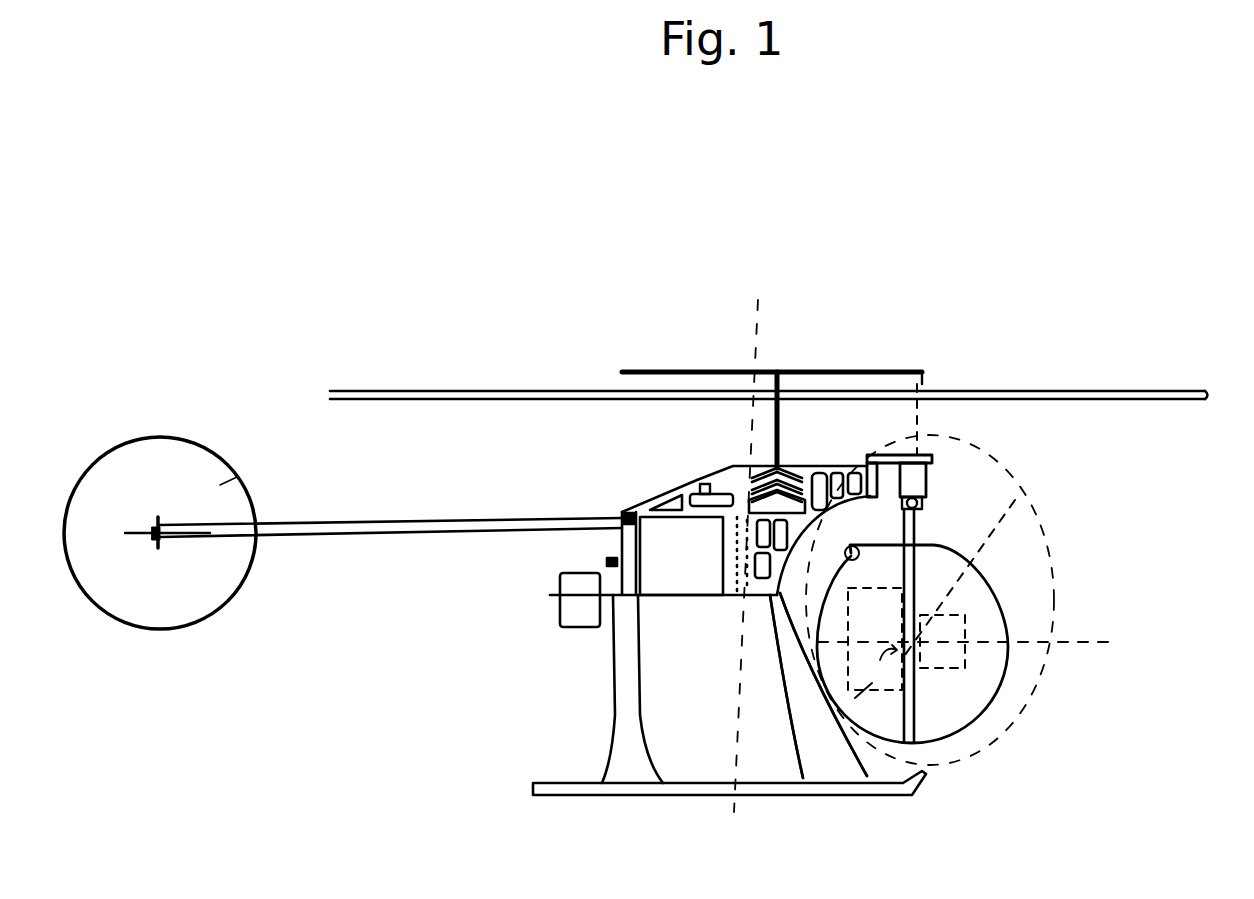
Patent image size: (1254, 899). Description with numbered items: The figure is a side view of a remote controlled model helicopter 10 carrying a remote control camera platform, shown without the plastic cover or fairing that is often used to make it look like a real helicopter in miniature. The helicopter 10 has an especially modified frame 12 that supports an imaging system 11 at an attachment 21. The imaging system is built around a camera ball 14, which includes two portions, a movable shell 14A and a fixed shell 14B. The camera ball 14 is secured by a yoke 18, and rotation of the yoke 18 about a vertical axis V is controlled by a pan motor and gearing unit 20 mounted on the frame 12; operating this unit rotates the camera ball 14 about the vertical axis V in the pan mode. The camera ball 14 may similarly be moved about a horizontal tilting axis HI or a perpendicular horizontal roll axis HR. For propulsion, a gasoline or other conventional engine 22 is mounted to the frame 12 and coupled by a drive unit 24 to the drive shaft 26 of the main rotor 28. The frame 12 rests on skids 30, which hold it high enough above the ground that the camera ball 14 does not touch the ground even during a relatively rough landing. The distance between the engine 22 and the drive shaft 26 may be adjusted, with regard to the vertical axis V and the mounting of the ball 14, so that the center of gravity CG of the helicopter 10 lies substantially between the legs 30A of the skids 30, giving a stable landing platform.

The remote controlled model helicopter 10 is at (636, 592).
The imaging system 11 is at (1035, 527).
The frame 12 is at (735, 598).
The camera ball 14 is at (916, 660).
The movable shell 14A is at (988, 694).
The fixed shell 14B is at (895, 720).
The yoke 18 is at (920, 528).
The pan motor and gearing unit 20 is at (936, 461).
The attachment 21 is at (892, 480).
The engine 22 is at (683, 580).
The drive unit 24 is at (766, 445).
The drive shaft 26 is at (782, 425).
The main rotor 28 is at (1113, 395).
The skids 30 is at (721, 790).
The legs 30A is at (627, 770).
The center of gravity CG is at (751, 546).
The vertical axis V is at (907, 360).
The horizontal tilting axis HI is at (1068, 476).
The horizontal roll axis HR is at (1132, 636).